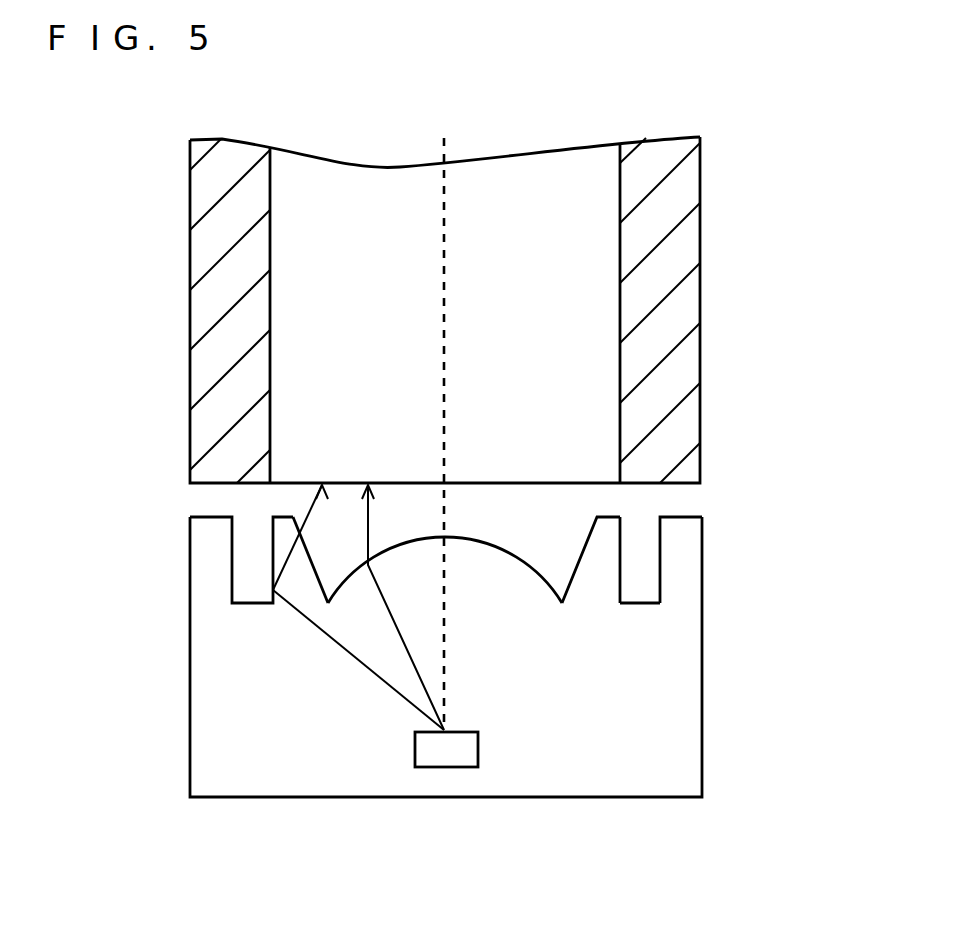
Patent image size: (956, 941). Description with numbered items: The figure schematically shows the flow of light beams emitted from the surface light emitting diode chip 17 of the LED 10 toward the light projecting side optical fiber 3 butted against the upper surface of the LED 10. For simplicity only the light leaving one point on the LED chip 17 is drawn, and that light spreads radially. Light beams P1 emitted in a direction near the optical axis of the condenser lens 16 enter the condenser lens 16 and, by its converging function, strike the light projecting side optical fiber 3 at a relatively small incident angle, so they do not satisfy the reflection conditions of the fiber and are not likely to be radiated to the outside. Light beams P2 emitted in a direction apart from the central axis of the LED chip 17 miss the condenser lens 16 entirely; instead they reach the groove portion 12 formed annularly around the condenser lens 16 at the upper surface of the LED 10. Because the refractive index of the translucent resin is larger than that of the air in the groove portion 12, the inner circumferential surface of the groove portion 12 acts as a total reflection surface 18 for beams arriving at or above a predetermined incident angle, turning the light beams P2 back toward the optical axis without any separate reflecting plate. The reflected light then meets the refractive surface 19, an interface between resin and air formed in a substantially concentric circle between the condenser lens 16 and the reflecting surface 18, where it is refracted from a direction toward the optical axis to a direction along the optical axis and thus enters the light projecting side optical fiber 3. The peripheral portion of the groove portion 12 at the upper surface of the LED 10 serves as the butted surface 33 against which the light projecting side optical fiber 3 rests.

The light projecting side optical fiber 3 is at (702, 238).
The LED 10 is at (702, 718).
The groove portion 12 is at (702, 535).
The condenser lens 16 is at (503, 550).
The surface light emitting diode chip 17 is at (448, 767).
The reflecting surface 18 is at (625, 577).
The refractive surface 19 is at (581, 565).
The butted surface 33 is at (208, 520).
The light beams P1 is at (358, 607).
The light beams P2 is at (358, 660).